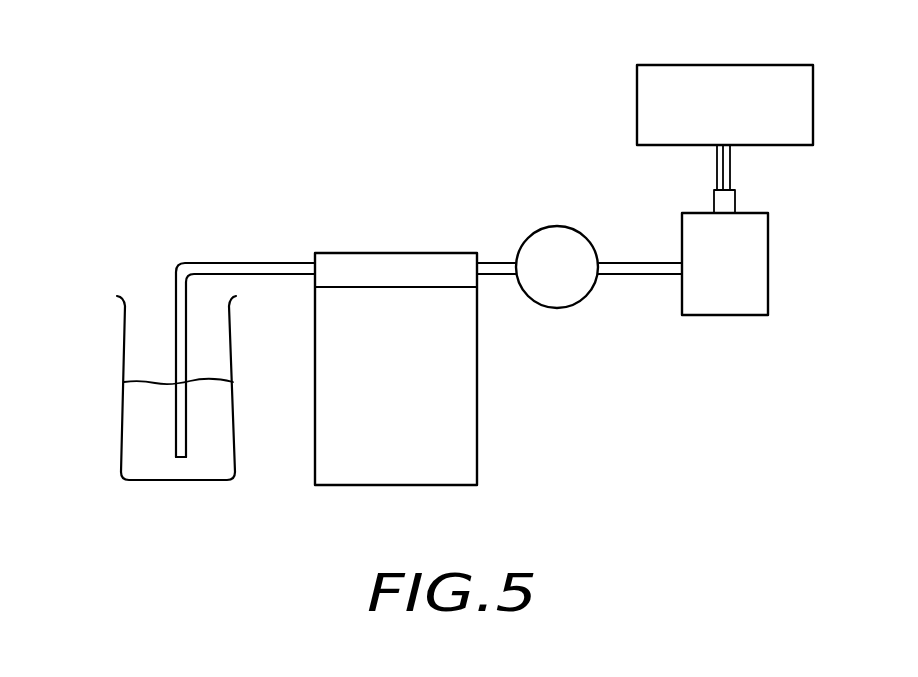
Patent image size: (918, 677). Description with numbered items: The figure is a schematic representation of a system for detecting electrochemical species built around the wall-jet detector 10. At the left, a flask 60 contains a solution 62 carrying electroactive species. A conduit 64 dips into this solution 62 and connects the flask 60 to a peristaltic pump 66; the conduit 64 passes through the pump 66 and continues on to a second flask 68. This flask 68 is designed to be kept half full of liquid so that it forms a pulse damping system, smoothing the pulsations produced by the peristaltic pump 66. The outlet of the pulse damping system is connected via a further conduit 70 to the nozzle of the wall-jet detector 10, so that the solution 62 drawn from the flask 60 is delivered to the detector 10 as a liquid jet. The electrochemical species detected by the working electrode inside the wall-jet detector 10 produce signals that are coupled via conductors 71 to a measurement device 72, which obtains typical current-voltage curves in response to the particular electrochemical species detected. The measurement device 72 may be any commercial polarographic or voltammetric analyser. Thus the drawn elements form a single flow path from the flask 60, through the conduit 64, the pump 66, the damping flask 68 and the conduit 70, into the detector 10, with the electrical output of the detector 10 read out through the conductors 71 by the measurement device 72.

The wall-jet detector 10 is at (776, 252).
The flask 60 is at (122, 333).
The solution 62 is at (147, 462).
The conduit 64 is at (253, 257).
The peristaltic pump 66 is at (371, 492).
The flask 68 is at (550, 315).
The conduit 70 is at (652, 284).
The conductors 71 is at (740, 165).
The measurement device 72 is at (725, 105).